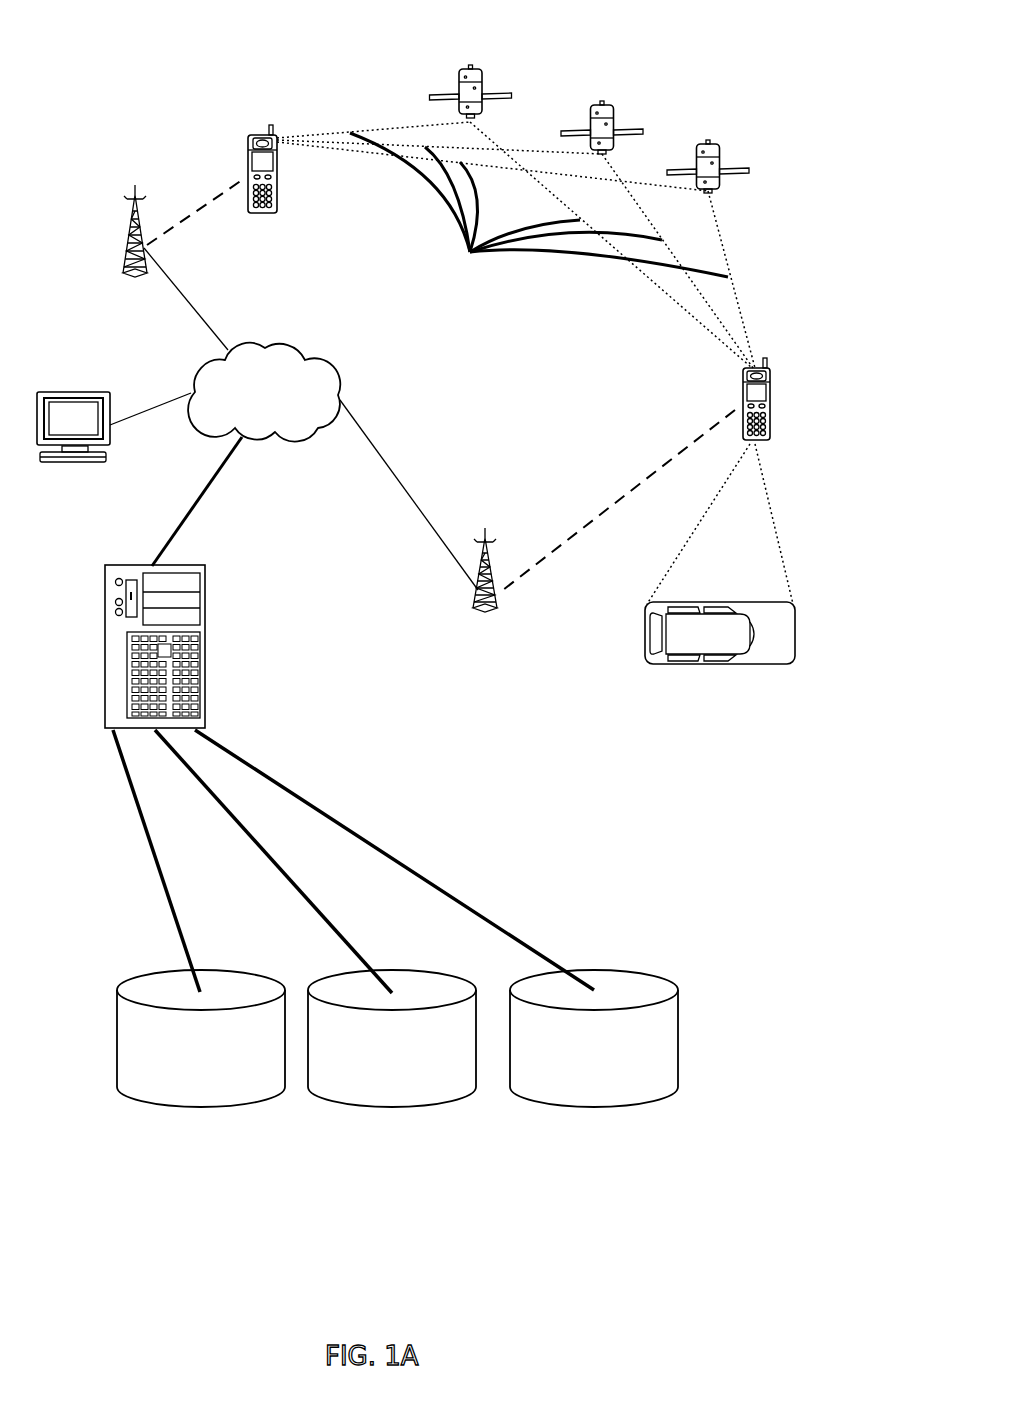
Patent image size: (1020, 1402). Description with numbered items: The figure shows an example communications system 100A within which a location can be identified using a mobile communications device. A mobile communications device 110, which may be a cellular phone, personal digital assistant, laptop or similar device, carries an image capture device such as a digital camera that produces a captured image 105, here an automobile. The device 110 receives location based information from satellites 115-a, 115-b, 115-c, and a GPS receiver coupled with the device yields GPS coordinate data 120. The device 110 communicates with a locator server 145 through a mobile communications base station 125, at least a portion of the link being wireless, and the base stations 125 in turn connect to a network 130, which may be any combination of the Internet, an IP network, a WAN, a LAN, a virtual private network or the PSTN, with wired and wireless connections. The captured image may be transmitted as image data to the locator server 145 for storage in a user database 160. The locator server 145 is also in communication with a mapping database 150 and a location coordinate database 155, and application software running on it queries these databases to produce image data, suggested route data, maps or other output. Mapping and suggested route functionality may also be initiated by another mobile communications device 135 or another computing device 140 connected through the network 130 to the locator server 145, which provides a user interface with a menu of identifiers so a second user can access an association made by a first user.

The communications system 100A is at (665, 880).
The image captured 105 is at (795, 650).
The mobile communications device 110 is at (771, 395).
The satellite 115-a is at (470, 65).
The satellite 115-b is at (602, 101).
The satellite 115-c is at (708, 140).
The GPS coordinate data 120 is at (539, 205).
The mobile communications base station 125 is at (133, 215).
The network 130 is at (285, 343).
The mobile communications device 135 is at (279, 172).
The computing device 140 is at (72, 392).
The locator server 145 is at (200, 622).
The mapping database 150 is at (205, 1106).
The location coordinate database 155 is at (392, 1106).
The user database 160 is at (597, 1106).